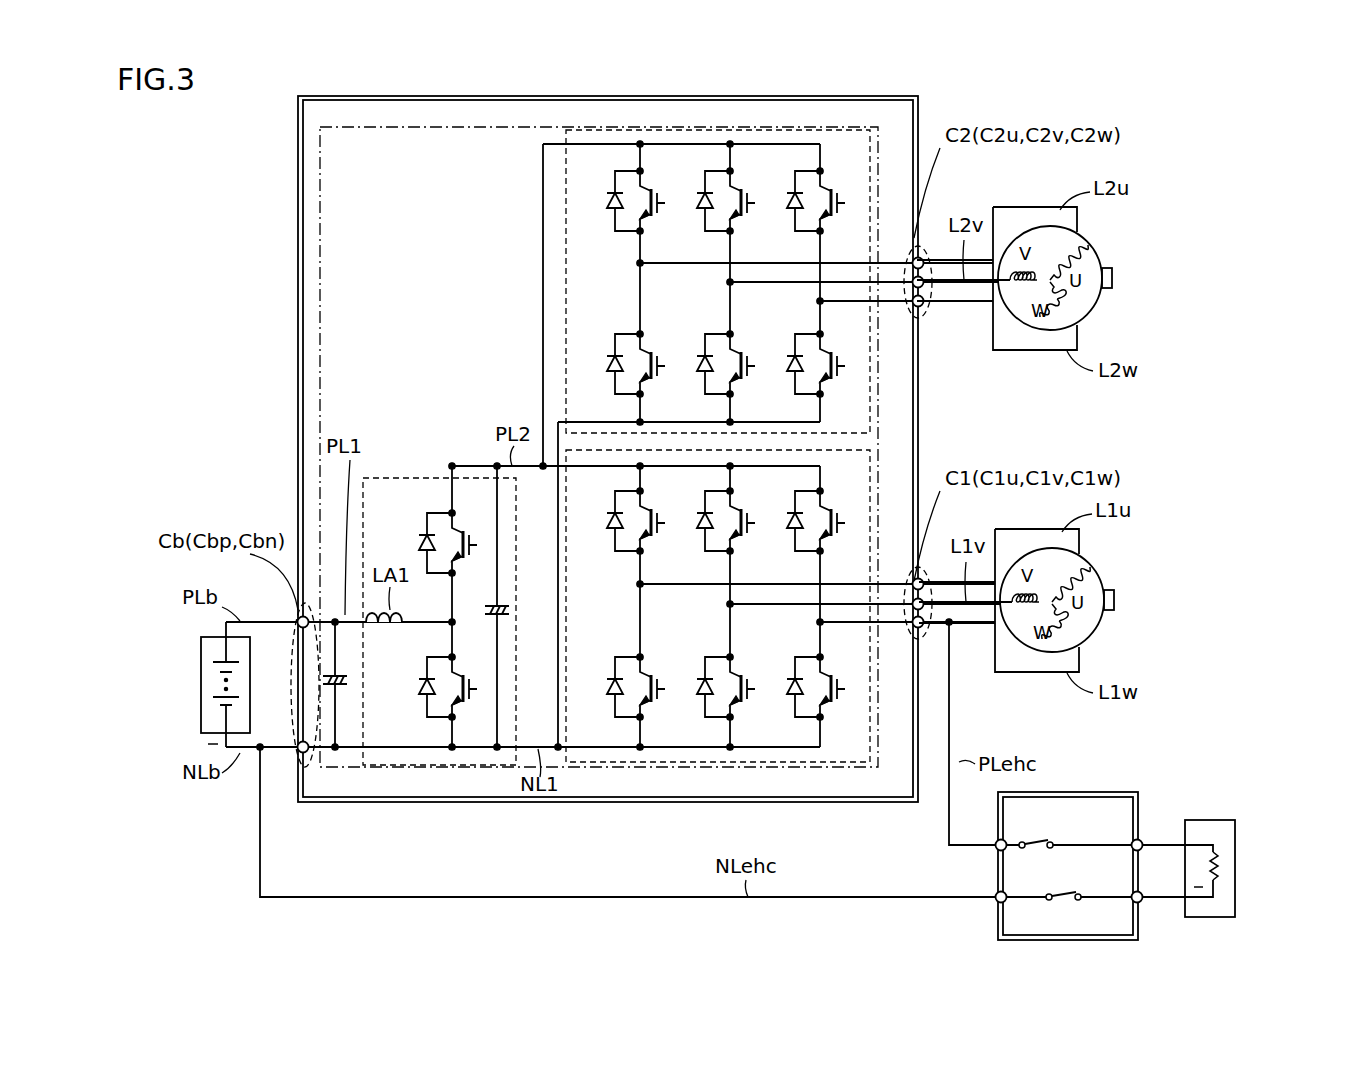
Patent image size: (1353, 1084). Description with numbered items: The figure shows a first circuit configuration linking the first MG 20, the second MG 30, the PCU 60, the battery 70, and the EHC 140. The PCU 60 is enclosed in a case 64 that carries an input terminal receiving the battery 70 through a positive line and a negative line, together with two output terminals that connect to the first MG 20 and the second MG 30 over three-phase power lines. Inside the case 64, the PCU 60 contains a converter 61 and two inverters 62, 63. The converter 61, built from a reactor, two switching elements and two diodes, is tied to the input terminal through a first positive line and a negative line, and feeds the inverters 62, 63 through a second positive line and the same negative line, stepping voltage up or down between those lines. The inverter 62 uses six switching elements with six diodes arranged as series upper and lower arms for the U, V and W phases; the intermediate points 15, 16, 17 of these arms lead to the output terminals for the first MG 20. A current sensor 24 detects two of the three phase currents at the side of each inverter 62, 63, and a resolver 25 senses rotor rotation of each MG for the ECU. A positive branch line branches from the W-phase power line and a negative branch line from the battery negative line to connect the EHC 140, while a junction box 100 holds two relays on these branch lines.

The intermediate point 15 is at (638, 263).
The intermediate point 16 is at (728, 282).
The intermediate point 17 is at (818, 301).
The first MG 20 is at (1080, 574).
The current sensor 24 is at (894, 260).
The resolver 25 is at (1115, 268).
The second MG 30 is at (1080, 252).
The PCU 60 is at (318, 200).
The converter 61 is at (429, 478).
The inverter 62 is at (636, 764).
The inverter 63 is at (802, 127).
The case 64 is at (298, 357).
The battery 70 is at (201, 725).
The junction box 100 is at (1108, 792).
The EHC 140 is at (1231, 820).